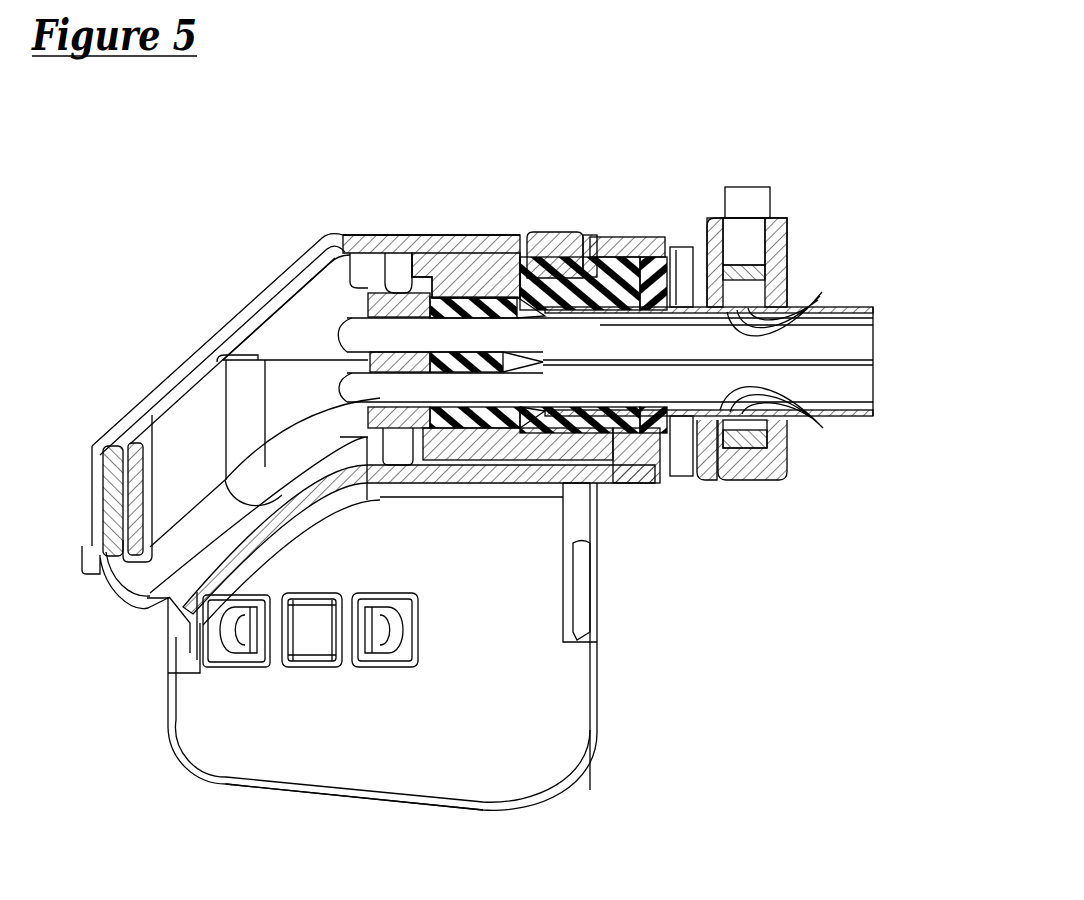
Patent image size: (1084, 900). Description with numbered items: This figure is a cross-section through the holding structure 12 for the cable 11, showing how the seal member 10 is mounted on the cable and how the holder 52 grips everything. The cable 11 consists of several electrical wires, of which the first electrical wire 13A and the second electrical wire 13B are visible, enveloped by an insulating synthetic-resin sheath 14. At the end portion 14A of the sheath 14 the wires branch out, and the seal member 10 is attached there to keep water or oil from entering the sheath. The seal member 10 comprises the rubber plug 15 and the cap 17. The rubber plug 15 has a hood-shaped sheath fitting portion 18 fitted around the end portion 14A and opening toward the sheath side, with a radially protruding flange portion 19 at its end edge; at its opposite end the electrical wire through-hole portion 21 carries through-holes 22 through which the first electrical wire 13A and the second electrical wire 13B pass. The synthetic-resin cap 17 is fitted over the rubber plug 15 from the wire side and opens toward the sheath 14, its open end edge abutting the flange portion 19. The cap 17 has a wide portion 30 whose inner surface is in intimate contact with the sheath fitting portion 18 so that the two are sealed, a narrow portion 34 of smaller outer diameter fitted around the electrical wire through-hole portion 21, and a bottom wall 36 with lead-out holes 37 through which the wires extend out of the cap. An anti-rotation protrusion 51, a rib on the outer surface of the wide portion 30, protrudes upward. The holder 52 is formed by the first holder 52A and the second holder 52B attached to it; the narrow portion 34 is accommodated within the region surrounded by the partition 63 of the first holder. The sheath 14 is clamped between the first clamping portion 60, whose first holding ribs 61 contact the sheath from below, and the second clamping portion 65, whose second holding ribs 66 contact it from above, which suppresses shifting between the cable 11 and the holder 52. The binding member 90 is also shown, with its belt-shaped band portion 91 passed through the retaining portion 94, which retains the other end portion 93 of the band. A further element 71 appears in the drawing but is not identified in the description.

The seal member 10 is at (483, 440).
The cable 11 is at (867, 307).
The holding structure 12 is at (214, 248).
The first electrical wire 13A is at (865, 343).
The second electrical wire 13B is at (865, 383).
The sheath 14 is at (872, 308).
The end portion 14A is at (487, 447).
The rubber plug 15 is at (607, 260).
The cap 17 is at (508, 250).
The sheath fitting portion 18 is at (660, 420).
The flange portion 19 is at (642, 267).
The electrical wire through-hole portion 21 is at (477, 440).
The through-holes 22 is at (423, 295).
The wide portion 30 is at (613, 455).
The narrow portion 34 is at (465, 258).
The bottom wall 36 is at (397, 283).
The lead-out holes 37 is at (390, 337).
The anti-rotation protrusion 51 is at (560, 233).
The holder 52 is at (152, 268).
The first holder 52A is at (100, 492).
The second holder 52B is at (130, 465).
The first clamping portion 60 is at (703, 470).
The first holding ribs 61 is at (823, 428).
The partition 63 is at (397, 450).
The second clamping portion 65 is at (775, 247).
The second holding ribs 66 is at (822, 292).
The cover flange 71 is at (580, 247).
The binding member 90 is at (713, 220).
The band portion 91 is at (750, 447).
The other end portion 93 is at (740, 187).
The retaining portion 94 is at (752, 223).